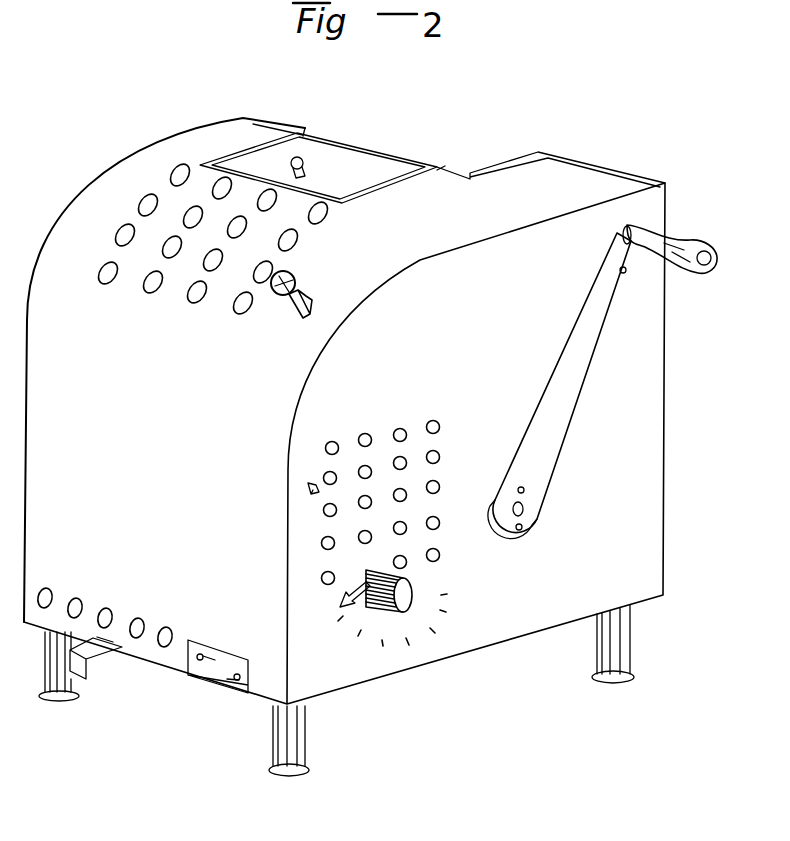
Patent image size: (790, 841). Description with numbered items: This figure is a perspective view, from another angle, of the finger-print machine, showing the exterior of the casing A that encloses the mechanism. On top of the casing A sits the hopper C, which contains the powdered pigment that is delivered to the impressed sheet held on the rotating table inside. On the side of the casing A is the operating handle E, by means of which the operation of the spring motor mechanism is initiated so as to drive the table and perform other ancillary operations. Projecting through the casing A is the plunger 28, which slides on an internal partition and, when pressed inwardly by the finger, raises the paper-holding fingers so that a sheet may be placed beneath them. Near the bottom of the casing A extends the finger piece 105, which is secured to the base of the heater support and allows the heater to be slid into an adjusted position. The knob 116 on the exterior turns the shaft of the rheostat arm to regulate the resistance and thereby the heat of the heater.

The casing A is at (344, 447).
The hopper C is at (318, 168).
The operating handle E is at (560, 417).
The plunger 28 is at (286, 302).
The finger piece 105 is at (100, 647).
The knob 116 is at (382, 604).